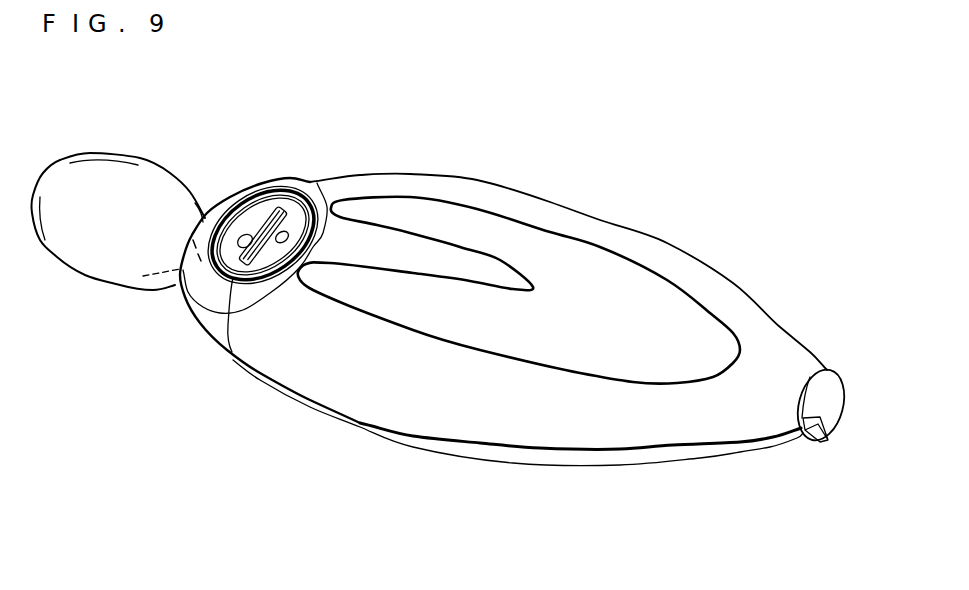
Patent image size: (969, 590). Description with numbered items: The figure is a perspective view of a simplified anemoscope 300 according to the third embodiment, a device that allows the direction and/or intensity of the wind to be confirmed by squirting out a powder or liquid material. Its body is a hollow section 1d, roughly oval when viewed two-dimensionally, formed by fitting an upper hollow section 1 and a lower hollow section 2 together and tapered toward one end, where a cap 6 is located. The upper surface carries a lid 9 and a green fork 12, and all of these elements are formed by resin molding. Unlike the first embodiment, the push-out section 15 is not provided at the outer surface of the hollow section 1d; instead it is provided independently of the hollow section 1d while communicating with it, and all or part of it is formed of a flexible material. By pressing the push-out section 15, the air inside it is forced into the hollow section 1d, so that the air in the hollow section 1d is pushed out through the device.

The upper hollow section 1 is at (603, 232).
The hollow section 1d is at (600, 423).
The lower hollow section 2 is at (577, 460).
The cap 6 is at (823, 394).
The lid 9 is at (260, 210).
The green fork 12 is at (640, 303).
The push-out section 15 is at (120, 177).
The simplified anemoscope 300 is at (458, 534).